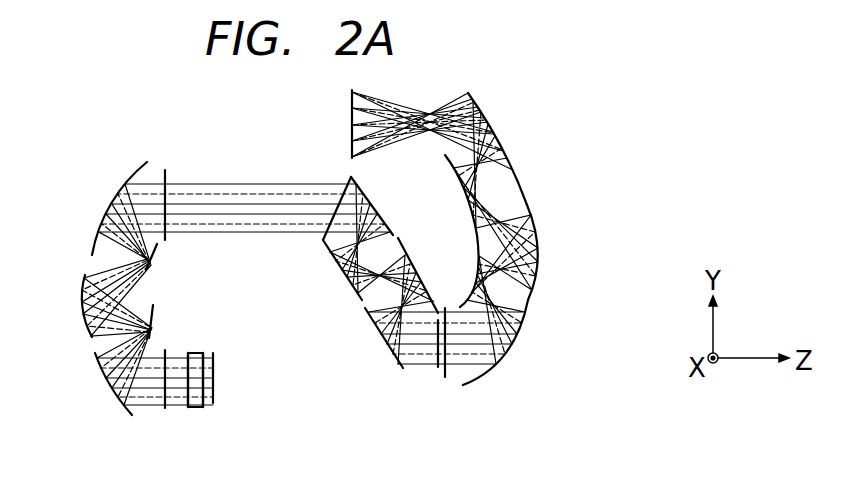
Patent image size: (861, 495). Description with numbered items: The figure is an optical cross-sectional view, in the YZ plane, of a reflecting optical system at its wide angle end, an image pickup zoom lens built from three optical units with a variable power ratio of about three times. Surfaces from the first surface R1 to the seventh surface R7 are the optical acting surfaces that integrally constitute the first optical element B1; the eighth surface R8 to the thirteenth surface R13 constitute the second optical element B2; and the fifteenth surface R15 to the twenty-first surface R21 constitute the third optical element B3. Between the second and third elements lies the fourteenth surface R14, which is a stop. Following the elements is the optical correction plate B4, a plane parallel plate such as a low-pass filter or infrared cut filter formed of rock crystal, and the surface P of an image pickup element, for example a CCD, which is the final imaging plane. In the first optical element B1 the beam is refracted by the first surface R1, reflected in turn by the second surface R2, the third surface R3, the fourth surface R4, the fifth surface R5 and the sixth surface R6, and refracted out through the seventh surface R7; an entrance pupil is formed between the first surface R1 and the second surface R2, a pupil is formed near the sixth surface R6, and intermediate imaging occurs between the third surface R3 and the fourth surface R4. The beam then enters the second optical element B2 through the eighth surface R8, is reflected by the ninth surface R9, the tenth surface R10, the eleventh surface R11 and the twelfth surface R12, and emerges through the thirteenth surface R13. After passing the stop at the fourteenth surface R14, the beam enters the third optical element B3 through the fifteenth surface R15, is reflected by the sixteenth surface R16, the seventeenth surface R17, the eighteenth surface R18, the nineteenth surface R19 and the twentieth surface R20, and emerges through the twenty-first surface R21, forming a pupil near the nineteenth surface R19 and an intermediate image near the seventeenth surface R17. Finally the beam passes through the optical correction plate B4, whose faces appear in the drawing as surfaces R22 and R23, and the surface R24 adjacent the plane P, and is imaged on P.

The first surface R1 is at (352, 104).
The second surface R2 is at (501, 128).
The third surface R3 is at (456, 172).
The fourth surface R4 is at (539, 236).
The fifth surface R5 is at (478, 266).
The sixth surface R6 is at (530, 290).
The seventh surface R7 is at (445, 377).
The eighth surface R8 is at (437, 367).
The ninth surface R9 is at (380, 338).
The tenth surface R10 is at (420, 262).
The eleventh surface R11 is at (350, 280).
The twelfth surface R12 is at (374, 207).
The thirteenth surface R13 is at (320, 180).
The fourteenth surface R14 is at (186, 178).
The fifteenth surface R15 is at (168, 168).
The sixteenth surface R16 is at (122, 189).
The seventeenth surface R17 is at (155, 265).
The eighteenth surface R18 is at (85, 318).
The nineteenth surface R19 is at (152, 313).
The twentieth surface R20 is at (117, 393).
The twenty-first surface R21 is at (163, 410).
The entrance surface of lens block B4 R22 is at (188, 352).
The exit surface of lens block B4 R23 is at (205, 352).
The image plane surface R24 is at (216, 370).
The first optical element B1 is at (520, 195).
The second optical element B2 is at (340, 262).
The third optical element B3 is at (98, 228).
The optical correction plate B4 is at (197, 407).
The surface of image pickup element P is at (225, 391).